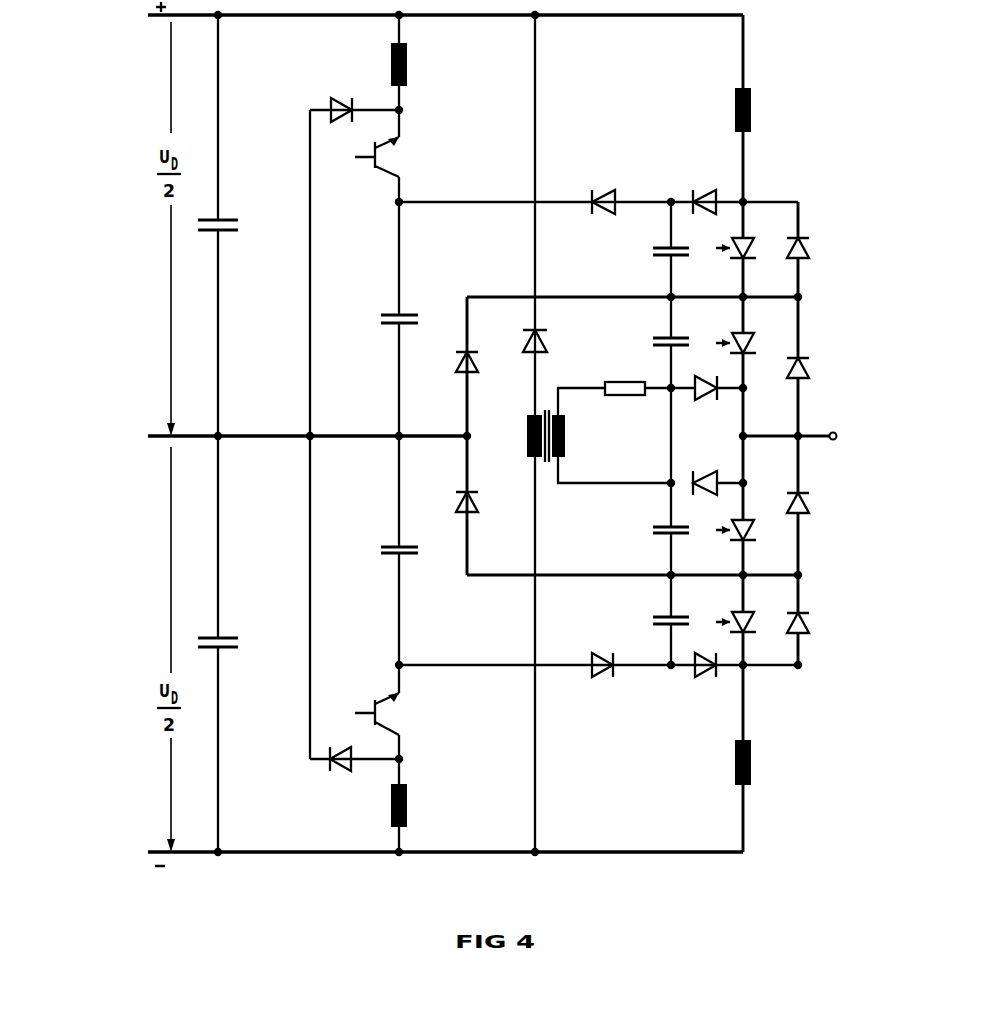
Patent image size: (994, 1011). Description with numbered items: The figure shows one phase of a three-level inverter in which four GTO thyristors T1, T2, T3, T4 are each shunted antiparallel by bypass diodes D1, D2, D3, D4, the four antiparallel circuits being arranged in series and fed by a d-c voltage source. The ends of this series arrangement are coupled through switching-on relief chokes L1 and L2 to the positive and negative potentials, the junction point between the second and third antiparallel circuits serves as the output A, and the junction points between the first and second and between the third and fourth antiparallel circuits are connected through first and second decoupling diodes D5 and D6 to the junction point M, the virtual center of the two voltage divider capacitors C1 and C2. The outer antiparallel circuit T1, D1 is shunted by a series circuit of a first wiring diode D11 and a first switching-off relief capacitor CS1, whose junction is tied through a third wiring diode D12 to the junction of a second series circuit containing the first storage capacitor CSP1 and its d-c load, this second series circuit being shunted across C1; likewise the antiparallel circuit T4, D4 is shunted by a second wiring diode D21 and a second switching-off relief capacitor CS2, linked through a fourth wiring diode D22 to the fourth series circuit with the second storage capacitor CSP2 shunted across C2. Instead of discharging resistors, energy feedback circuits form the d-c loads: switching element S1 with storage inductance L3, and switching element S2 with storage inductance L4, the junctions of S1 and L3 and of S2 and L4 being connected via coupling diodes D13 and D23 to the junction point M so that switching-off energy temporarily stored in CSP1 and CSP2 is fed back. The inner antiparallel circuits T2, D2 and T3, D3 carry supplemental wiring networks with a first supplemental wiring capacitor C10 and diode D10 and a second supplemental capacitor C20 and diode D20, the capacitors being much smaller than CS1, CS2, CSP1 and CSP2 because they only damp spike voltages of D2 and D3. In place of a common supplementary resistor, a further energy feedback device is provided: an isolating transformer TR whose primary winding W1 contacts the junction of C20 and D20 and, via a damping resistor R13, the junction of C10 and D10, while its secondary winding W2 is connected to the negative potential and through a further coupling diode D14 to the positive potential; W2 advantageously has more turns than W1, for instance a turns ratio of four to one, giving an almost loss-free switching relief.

The first voltage divider capacitor C1 is at (226, 220).
The second voltage divider capacitor C2 is at (226, 638).
The first storage capacitor CSP1 is at (390, 316).
The second storage capacitor CSP2 is at (390, 557).
The coupling diode D13 is at (340, 96).
The coupling diode D23 is at (342, 772).
The storage inductance L3 is at (407, 74).
The storage inductance L4 is at (407, 806).
The switching element S1 is at (390, 156).
The switching element S2 is at (390, 718).
The switching-on relief choke L1 is at (752, 110).
The switching-on relief choke L2 is at (752, 761).
The third wiring diode D12 is at (603, 190).
The first wiring diode D11 is at (705, 190).
The fourth wiring diode D22 is at (602, 678).
The second wiring diode D21 is at (705, 678).
The first switching-off relief capacitor CS1 is at (652, 252).
The second switching-off relief capacitor CS2 is at (652, 624).
The first supplemental wiring capacitor C10 is at (652, 342).
The second supplemental switching capacitor C20 is at (652, 531).
The GTO thyristor T1 is at (746, 240).
The GTO thyristor T2 is at (746, 336).
The GTO thyristor T3 is at (748, 540).
The GTO thyristor T4 is at (748, 632).
The bypass diode D1 is at (806, 240).
The bypass diode D2 is at (806, 358).
The bypass diode D3 is at (808, 515).
The bypass diode D4 is at (808, 633).
The first decoupling diode D5 is at (478, 372).
The second decoupling diode D6 is at (478, 496).
The further coupling diode D14 is at (548, 342).
The isolating transformer TR is at (546, 410).
The primary winding W1 is at (565, 442).
The secondary winding W2 is at (527, 445).
The damping resistor R13 is at (640, 397).
The first supplemental wiring diode D10 is at (695, 397).
The second supplemental wiring diode D20 is at (695, 472).
The junction point M is at (145, 416).
The output A is at (834, 432).